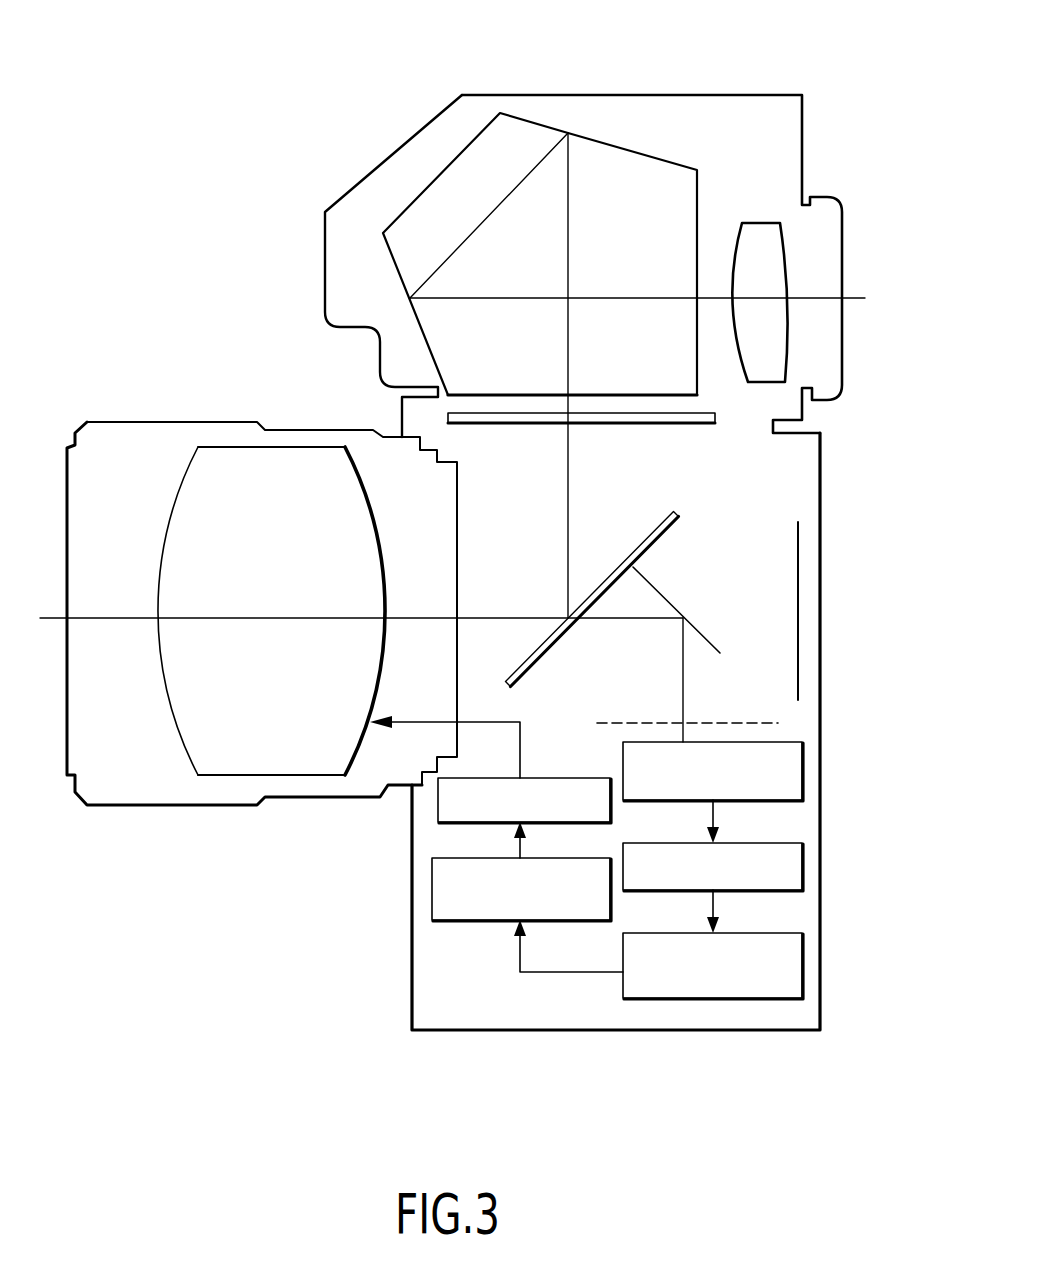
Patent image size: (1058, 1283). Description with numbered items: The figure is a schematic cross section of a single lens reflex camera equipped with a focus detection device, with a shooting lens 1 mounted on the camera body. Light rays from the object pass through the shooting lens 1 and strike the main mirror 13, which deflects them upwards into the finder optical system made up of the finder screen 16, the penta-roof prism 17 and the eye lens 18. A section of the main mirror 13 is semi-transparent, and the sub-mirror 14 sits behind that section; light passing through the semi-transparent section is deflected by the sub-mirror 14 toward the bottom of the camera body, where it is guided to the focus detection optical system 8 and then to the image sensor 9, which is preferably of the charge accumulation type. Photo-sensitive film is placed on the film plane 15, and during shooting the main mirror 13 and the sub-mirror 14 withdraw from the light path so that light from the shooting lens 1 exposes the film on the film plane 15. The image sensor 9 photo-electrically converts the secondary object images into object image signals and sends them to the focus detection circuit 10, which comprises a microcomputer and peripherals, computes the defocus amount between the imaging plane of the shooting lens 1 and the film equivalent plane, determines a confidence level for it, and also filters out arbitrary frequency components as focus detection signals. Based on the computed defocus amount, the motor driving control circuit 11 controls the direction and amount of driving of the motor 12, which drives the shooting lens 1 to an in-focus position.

The shooting lens 1 is at (220, 768).
The focus detection optical system 8 is at (803, 765).
The image sensor 9 is at (803, 873).
The focus detection circuit 10 is at (727, 1000).
The motor driving control circuit 11 is at (447, 918).
The motor 12 is at (443, 823).
The main mirror 13 is at (650, 535).
The sub-mirror 14 is at (705, 633).
The film plane 15 is at (797, 538).
The finder screen 16 is at (500, 427).
The penta-roof prism 17 is at (627, 178).
The eye lens 18 is at (767, 258).